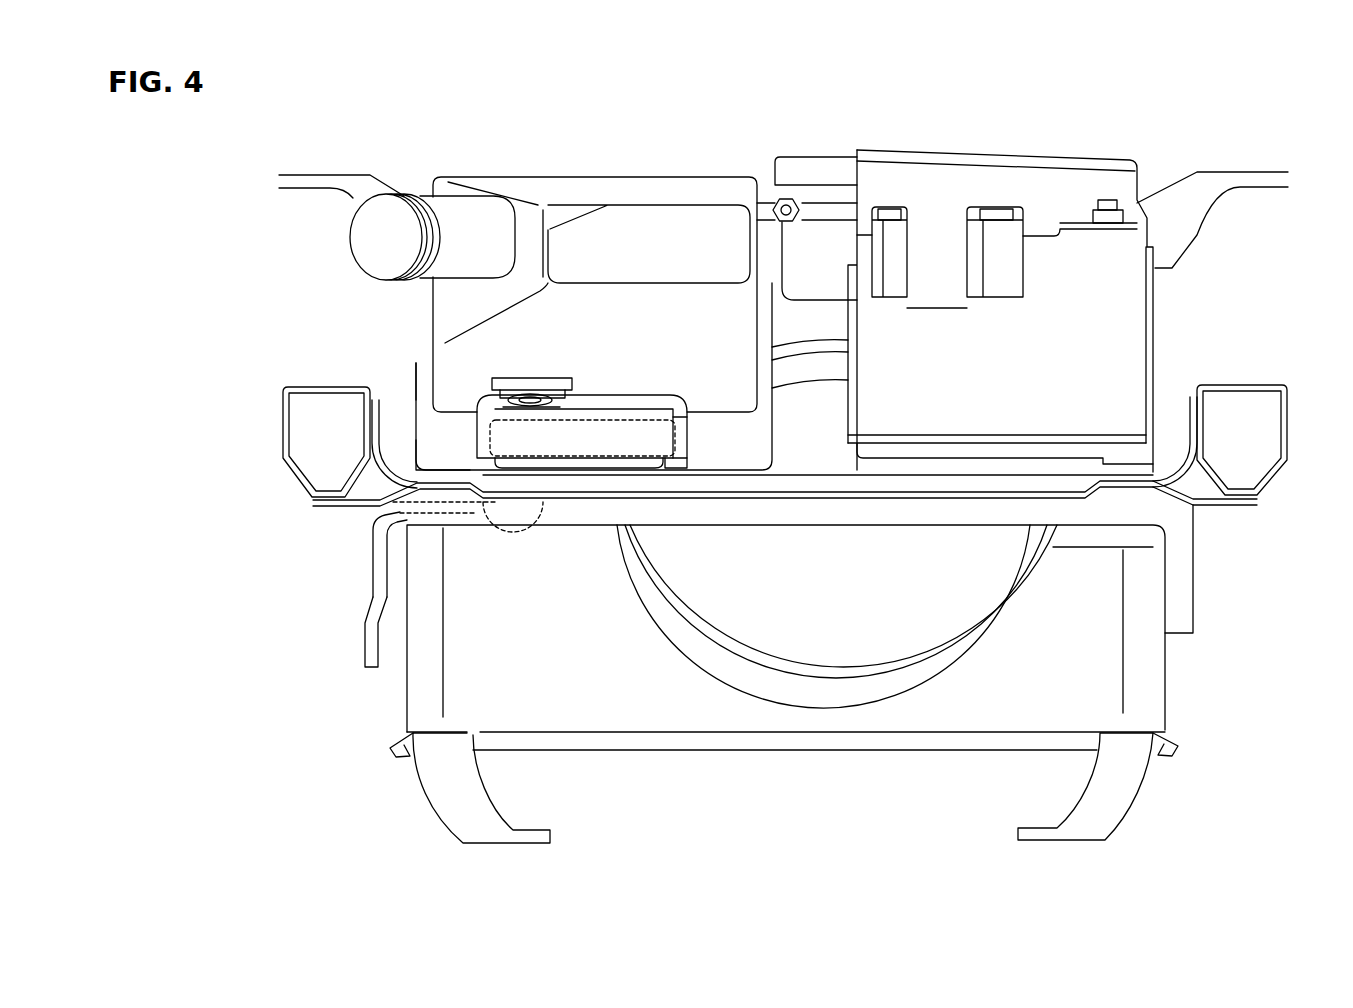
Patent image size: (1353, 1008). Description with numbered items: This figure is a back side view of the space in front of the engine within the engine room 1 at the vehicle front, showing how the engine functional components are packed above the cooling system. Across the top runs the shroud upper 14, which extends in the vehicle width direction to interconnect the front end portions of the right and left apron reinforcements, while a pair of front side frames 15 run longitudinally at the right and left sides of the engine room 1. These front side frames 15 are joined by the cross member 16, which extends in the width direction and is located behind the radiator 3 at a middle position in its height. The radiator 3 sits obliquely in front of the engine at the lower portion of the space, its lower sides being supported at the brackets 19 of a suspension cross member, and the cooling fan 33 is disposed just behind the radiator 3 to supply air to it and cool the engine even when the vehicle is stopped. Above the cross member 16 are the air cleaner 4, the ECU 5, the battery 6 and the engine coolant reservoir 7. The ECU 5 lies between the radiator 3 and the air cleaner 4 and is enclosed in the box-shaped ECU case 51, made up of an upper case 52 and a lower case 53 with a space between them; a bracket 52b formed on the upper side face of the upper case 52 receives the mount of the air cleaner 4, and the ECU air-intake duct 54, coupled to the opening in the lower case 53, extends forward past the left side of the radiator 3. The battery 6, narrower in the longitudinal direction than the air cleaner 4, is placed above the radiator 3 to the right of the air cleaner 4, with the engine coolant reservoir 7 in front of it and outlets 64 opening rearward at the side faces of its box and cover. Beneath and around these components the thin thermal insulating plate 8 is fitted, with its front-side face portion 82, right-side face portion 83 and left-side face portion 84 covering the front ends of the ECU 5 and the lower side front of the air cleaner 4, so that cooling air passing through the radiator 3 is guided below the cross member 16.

The engine room 1 is at (556, 122).
The radiator 3 is at (623, 722).
The air cleaner 4 is at (631, 168).
The engine control unit (ECU) 5 is at (680, 440).
The battery 6 is at (1079, 214).
The engine coolant reservoir 7 is at (828, 228).
The thermal insulating plate 8 is at (810, 391).
The right-side face portion 83 is at (782, 402).
The shroud upper 14 is at (388, 194).
The front side frames 15 is at (315, 379).
The cross member 16 is at (566, 544).
The brackets 19 is at (491, 803).
The cooling fan 33 is at (980, 593).
The ECU case 51 is at (687, 387).
The upper case 52 is at (645, 393).
The bracket 52b is at (556, 402).
The lower case 53 is at (684, 463).
The ECU air-intake duct 54 is at (372, 582).
The outlets 64 is at (895, 292).
The front-side face portion 82 is at (430, 454).
The left-side face portion 84 is at (413, 403).